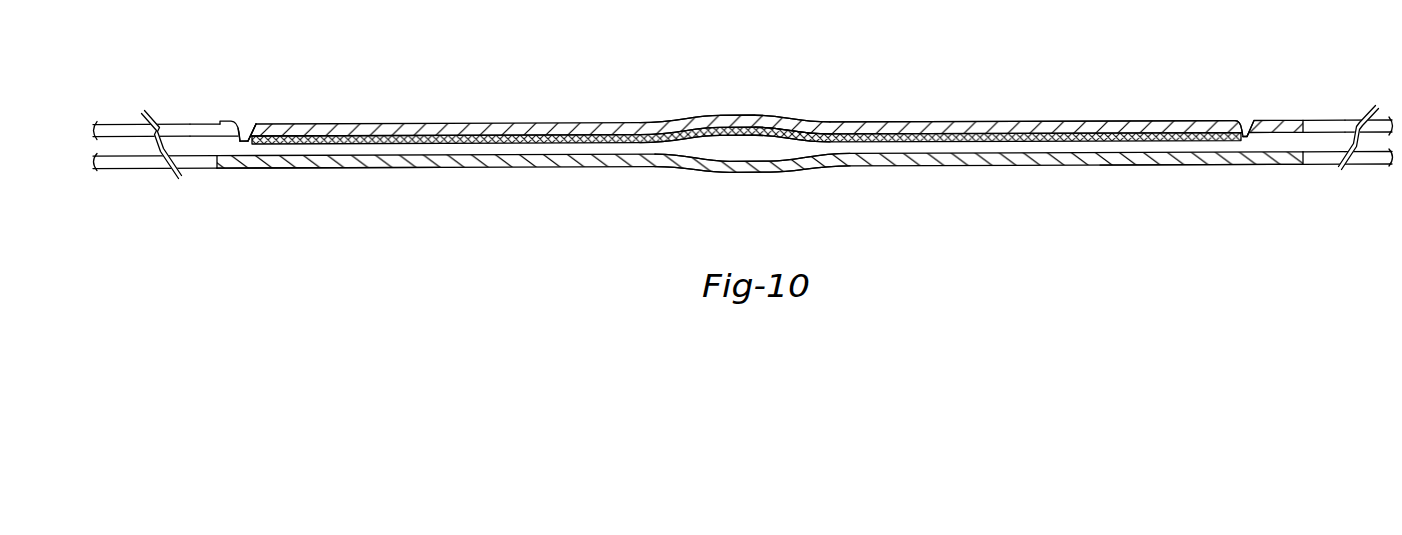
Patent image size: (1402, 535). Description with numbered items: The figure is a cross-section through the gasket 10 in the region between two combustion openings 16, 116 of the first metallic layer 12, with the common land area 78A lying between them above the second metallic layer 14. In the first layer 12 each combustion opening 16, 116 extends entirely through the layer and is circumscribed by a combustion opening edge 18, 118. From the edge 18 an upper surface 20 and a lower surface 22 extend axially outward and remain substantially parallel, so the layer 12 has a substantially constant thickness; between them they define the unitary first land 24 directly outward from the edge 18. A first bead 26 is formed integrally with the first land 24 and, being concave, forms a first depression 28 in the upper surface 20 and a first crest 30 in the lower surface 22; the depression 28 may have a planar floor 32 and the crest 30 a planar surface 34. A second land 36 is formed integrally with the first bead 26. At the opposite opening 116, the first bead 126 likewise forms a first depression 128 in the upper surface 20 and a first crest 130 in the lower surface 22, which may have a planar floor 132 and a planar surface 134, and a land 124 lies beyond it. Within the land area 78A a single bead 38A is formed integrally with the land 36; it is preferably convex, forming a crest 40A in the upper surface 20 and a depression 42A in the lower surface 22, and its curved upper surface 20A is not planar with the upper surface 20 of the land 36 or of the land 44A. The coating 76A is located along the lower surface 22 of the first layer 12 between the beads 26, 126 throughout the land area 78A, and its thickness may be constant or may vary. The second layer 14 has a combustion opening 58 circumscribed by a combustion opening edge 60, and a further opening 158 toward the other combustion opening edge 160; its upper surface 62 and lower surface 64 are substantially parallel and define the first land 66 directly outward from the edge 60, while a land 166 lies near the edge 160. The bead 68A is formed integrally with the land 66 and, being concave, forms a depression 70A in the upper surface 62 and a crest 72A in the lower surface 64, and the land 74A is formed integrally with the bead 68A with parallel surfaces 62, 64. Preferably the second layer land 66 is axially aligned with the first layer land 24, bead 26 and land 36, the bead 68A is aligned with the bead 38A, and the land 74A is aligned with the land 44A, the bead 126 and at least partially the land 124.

The gasket 10 is at (398, 64).
The first metallic layer 12 is at (432, 123).
The second metallic layer 14 is at (432, 168).
The combustion opening 16 is at (167, 130).
The combustion opening edge 18 is at (215, 128).
The upper surface 20 is at (285, 124).
The lower surface 22 is at (320, 135).
The first land 24 is at (227, 124).
The first bead 26 is at (250, 113).
The first depression 28 is at (255, 126).
The first crest 30 is at (242, 148).
The planar floor 32 is at (247, 128).
The planar surface 34 is at (247, 148).
The second land 36 is at (307, 121).
The combustion opening 58 is at (188, 166).
The combustion opening edge 60 is at (218, 163).
The upper surface 62 is at (298, 163).
The lower surface 64 is at (338, 168).
The first land 66 is at (277, 174).
The upper surface 20A is at (712, 118).
The single bead 38A is at (737, 114).
The crest 40A is at (753, 121).
The depression 42A is at (773, 130).
The land 44A is at (882, 121).
The coating 76A is at (723, 134).
The land area 78A is at (935, 71).
The bead 68A is at (745, 178).
The depression 70A is at (763, 161).
The crest 72A is at (797, 171).
The land 74A is at (857, 163).
The combustion opening 116 is at (1333, 122).
The combustion opening edge 118 is at (1310, 124).
The land 124 is at (1300, 122).
The first bead 126 is at (1249, 112).
The first depression 128 is at (1256, 120).
The first crest 130 is at (1240, 148).
The planar floor 132 is at (1242, 127).
The planar surface 134 is at (1247, 143).
The distal inner shaft 158 is at (1333, 157).
The combustion opening edge 160 is at (1317, 158).
The land 166 is at (1208, 169).